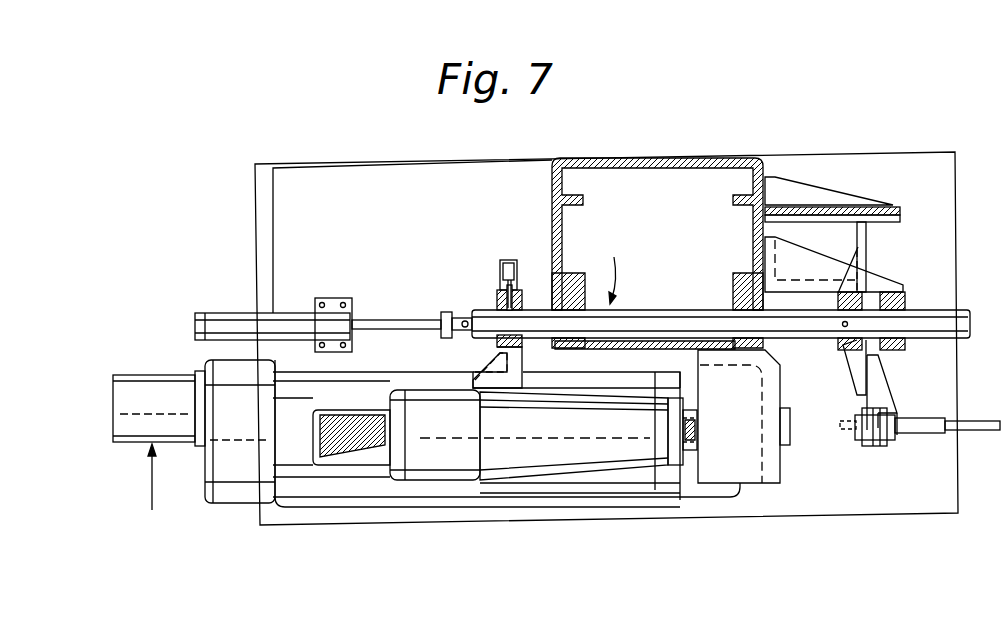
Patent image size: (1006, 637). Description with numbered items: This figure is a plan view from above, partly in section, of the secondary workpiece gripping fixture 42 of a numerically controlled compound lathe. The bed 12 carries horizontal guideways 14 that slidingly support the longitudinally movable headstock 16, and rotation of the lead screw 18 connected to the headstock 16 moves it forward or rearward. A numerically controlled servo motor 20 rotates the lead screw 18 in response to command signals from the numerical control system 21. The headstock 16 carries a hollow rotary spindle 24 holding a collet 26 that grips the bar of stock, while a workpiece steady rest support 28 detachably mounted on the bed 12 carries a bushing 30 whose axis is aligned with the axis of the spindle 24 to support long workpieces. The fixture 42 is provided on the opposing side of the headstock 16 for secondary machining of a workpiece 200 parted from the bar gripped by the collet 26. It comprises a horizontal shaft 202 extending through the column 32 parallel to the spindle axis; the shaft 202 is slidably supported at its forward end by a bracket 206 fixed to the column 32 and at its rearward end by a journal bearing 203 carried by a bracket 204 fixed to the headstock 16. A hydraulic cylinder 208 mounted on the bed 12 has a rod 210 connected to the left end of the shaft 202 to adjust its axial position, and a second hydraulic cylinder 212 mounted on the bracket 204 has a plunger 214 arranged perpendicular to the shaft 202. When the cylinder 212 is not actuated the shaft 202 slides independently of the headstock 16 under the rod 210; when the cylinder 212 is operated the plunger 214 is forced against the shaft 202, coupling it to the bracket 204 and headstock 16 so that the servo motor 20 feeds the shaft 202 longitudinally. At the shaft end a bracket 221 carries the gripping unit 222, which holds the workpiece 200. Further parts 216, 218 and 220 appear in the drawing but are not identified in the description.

The bed 12 is at (858, 495).
The horizontal guideways 14 is at (297, 507).
The headstock 16 is at (548, 470).
The lead screw 18 is at (338, 452).
The numerically controlled servo motor 20 is at (155, 375).
The numerical control system 21 is at (158, 521).
The hollow rotary spindle 24 is at (385, 448).
The collet 26 is at (688, 470).
The workpiece steady rest support 28 is at (772, 483).
The bushing 30 is at (790, 440).
The column 32 is at (668, 157).
The secondary workpiece gripping fixture 42 is at (616, 267).
The workpiece 200 is at (840, 425).
The horizontal shaft 202 is at (673, 310).
The journal bearing 203 is at (497, 341).
The bracket 204 is at (478, 372).
The bracket 206 is at (890, 283).
The hydraulic cylinder 208 is at (218, 315).
The plunger or rod 210 is at (394, 318).
The hydraulic cylinder 212 is at (505, 262).
The piston or plunger 214 is at (502, 292).
The bearing 216 is at (850, 346).
The plate 218 is at (878, 222).
The wedge member 220 is at (877, 193).
The bracket 221 is at (887, 388).
The gripping unit 222 is at (882, 442).